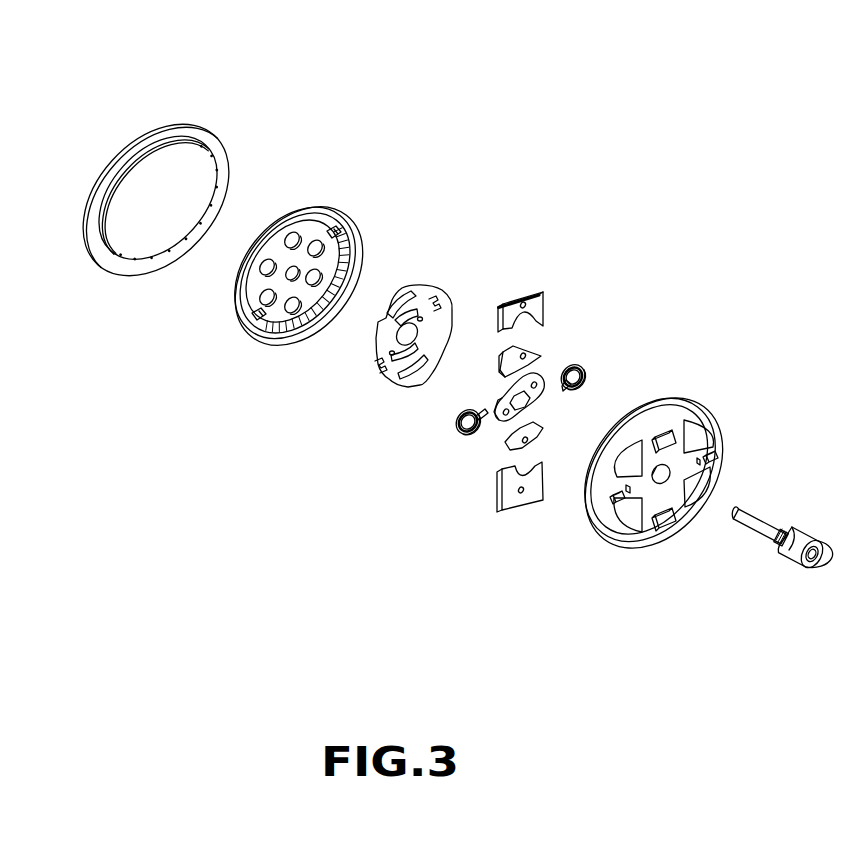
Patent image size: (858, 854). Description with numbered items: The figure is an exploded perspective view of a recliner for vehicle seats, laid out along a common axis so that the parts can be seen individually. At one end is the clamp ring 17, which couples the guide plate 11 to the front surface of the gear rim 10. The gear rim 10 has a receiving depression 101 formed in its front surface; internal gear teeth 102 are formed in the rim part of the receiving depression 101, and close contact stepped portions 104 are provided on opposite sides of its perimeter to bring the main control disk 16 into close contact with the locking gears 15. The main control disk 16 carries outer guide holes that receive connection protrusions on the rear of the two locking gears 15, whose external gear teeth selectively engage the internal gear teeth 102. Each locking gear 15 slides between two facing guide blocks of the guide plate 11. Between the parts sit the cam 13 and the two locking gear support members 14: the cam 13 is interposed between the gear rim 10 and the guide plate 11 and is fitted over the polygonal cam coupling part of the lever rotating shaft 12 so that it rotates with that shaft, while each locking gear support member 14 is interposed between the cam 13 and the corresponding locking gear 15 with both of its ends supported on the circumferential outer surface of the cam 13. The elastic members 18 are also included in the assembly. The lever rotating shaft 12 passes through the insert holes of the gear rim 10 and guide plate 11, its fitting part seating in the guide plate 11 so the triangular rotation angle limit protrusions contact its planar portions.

The gear rim 10 is at (333, 267).
The receiving depression 101 is at (283, 251).
The internal gear teeth 102 is at (287, 333).
The close contact stepped portions 104 is at (338, 253).
The guide plate 11 is at (696, 400).
The lever rotating shaft 12 is at (773, 518).
The cam 13 is at (500, 387).
The locking gear support members 14 is at (540, 347).
The locking gears 15 is at (530, 282).
The main control disk 16 is at (443, 290).
The clamp ring 17 is at (180, 127).
The elastic members 18 is at (584, 370).